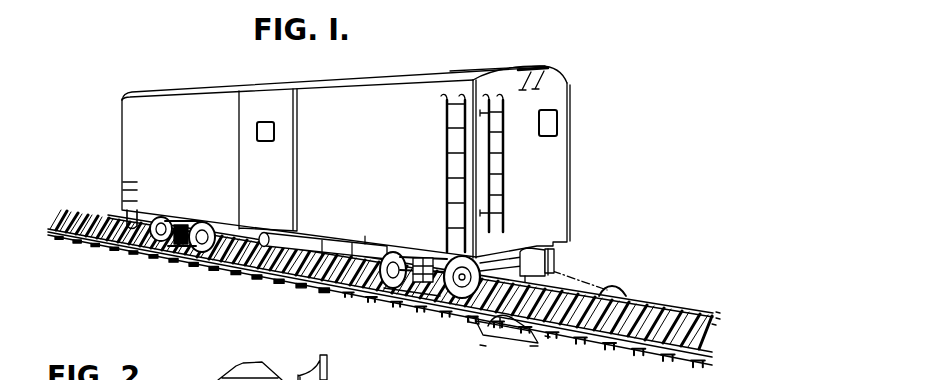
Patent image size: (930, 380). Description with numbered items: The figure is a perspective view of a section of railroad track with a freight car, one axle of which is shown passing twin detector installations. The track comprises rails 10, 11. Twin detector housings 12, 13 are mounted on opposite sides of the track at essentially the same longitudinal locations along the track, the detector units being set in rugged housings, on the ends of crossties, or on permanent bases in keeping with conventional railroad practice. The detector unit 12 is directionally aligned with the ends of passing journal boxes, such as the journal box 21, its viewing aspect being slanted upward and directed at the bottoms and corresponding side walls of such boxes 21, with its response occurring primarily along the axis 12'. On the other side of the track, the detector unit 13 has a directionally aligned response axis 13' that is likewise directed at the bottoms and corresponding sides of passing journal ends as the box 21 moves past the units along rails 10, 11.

The rail 10 is at (560, 328).
The rail 11 is at (626, 300).
The detector housing 12 is at (513, 342).
The response axis 12' is at (461, 340).
The detector housing 13 is at (619, 276).
The response axis 13' is at (572, 270).
The journal box 21 is at (444, 293).